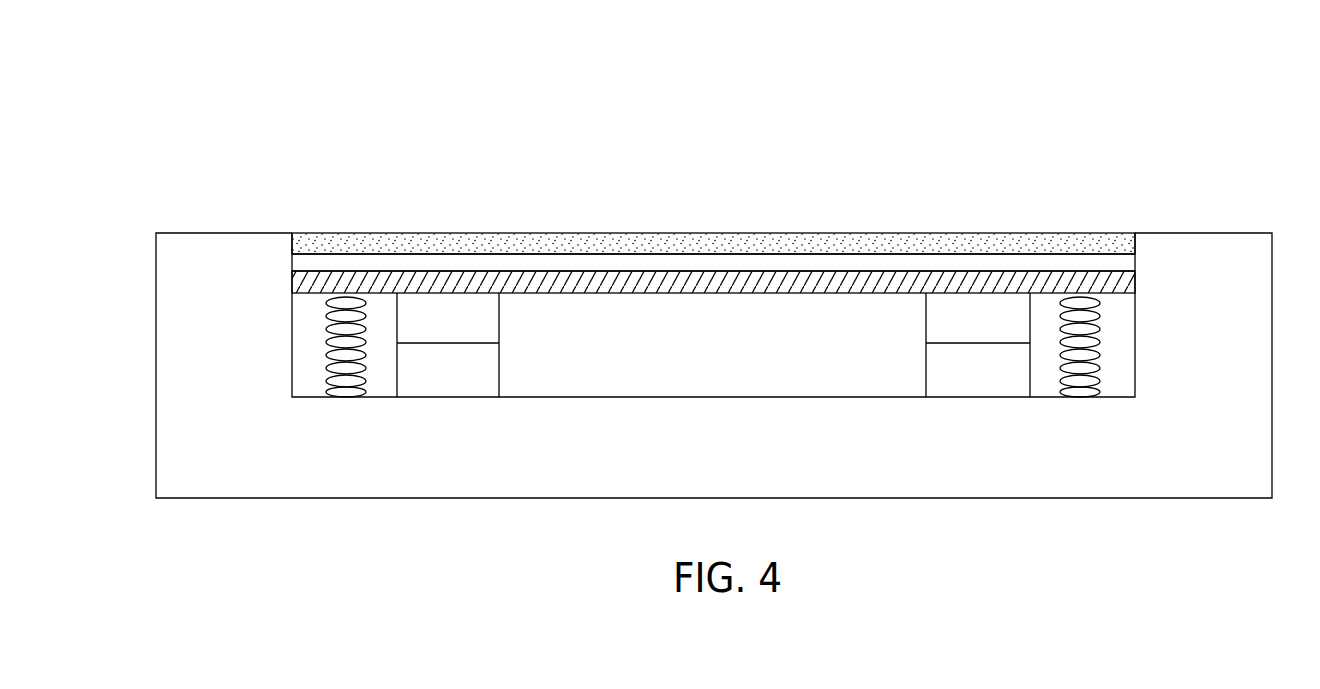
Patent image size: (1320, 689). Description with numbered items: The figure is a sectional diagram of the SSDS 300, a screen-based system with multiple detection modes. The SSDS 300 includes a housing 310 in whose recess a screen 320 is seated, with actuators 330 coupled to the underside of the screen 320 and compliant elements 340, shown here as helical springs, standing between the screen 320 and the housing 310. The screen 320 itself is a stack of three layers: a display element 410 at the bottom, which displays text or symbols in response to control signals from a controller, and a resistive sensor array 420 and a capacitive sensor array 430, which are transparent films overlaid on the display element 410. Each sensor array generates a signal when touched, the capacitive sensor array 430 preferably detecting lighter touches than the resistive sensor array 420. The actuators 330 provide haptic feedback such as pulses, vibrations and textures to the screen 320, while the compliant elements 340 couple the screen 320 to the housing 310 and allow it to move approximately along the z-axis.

The SSDS 300 is at (714, 254).
The housing 310 is at (1208, 233).
The screen 320 is at (713, 213).
The actuators 330 is at (488, 328).
The compliant elements 340 is at (1103, 357).
The display element 410 is at (483, 190).
The resistive sensor array 420 is at (412, 260).
The capacitive sensor array 430 is at (458, 243).